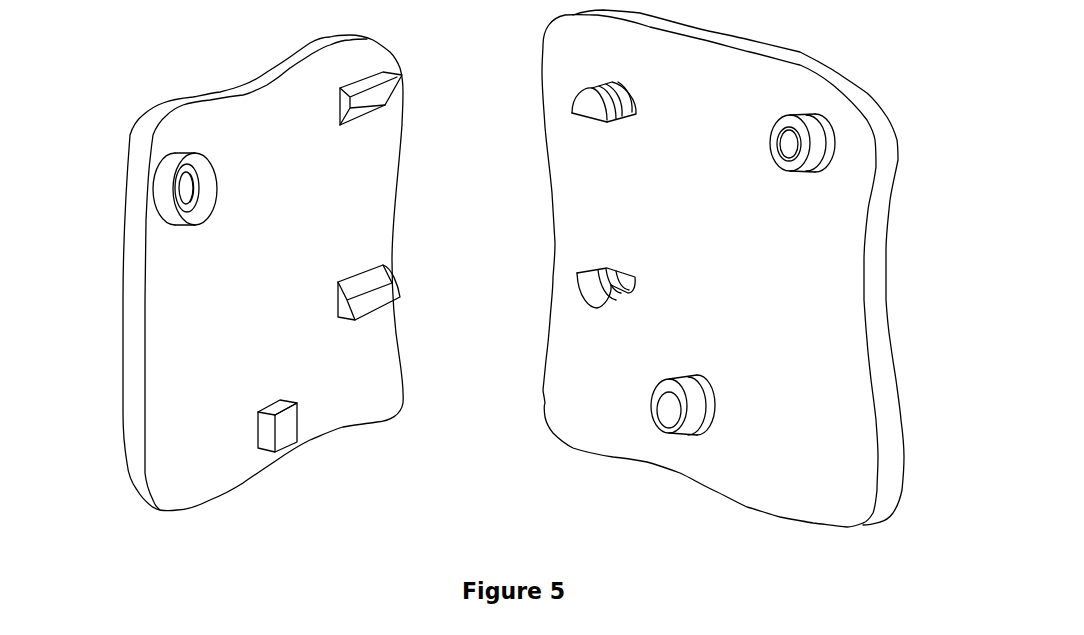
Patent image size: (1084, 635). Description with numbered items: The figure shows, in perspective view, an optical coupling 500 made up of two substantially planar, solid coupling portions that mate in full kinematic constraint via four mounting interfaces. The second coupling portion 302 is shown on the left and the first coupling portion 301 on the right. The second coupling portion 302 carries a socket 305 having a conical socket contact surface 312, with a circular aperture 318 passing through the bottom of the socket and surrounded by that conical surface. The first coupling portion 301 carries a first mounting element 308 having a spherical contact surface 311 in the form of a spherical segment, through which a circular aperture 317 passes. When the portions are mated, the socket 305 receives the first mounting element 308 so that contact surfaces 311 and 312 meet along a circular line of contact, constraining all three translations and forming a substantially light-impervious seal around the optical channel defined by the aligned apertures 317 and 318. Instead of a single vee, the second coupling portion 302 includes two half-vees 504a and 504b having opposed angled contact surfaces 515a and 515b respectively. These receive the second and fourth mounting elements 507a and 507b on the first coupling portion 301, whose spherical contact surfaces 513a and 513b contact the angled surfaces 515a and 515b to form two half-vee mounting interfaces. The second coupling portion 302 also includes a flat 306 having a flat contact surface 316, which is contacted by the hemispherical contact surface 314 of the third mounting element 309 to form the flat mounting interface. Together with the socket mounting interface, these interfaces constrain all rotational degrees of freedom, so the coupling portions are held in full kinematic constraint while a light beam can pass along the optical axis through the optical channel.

The optical coupling 500 is at (150, 70).
The second coupling portion 302 is at (167, 387).
The socket 305 is at (178, 186).
The circular aperture 318 is at (183, 192).
The conical socket contact surface 312 is at (193, 212).
The half-vee 504a is at (347, 98).
The angled contact surface 515a is at (377, 95).
The half-vee 504b is at (373, 303).
The angled contact surface 515b is at (377, 295).
The flat 306 is at (268, 427).
The flat contact surface 316 is at (282, 430).
The first coupling portion 301 is at (823, 360).
The second mounting element 507a is at (583, 110).
The spherical contact surface 513a is at (603, 107).
The fourth mounting element 507b is at (593, 290).
The spherical contact surface 513b is at (608, 303).
The first mounting element 308 is at (820, 143).
The circular aperture 317 is at (787, 148).
The spherical contact surface 311 is at (800, 160).
The third mounting element 309 is at (685, 412).
The spherical contact surface 314 is at (662, 407).